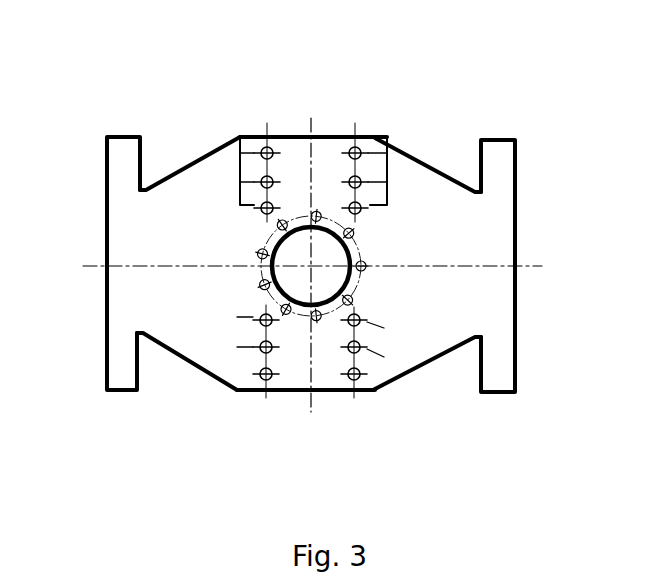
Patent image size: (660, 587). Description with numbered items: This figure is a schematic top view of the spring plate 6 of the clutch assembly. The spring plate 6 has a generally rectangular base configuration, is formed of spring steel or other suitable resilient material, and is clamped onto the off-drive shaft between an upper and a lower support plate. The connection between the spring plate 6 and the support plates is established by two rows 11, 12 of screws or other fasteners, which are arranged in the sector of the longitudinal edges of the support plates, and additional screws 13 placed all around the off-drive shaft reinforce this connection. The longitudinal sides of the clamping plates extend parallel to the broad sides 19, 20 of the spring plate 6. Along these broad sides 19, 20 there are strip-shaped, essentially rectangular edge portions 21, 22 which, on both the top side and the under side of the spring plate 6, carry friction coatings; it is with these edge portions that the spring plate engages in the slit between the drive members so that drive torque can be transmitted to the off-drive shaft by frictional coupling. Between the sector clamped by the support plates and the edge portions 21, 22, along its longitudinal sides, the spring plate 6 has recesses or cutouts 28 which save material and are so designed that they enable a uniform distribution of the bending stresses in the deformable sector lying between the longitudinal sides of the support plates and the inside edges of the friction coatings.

The spring plate 6 is at (293, 365).
The row of screws 11 is at (240, 137).
The row of screws 12 is at (387, 137).
The additional screws 13 is at (257, 251).
The broad side of spring plate 19 is at (107, 221).
The broad side of spring plate 20 is at (515, 254).
The edge portion 21 is at (117, 334).
The edge portion 22 is at (499, 210).
The recesses or cutouts 28 is at (165, 162).